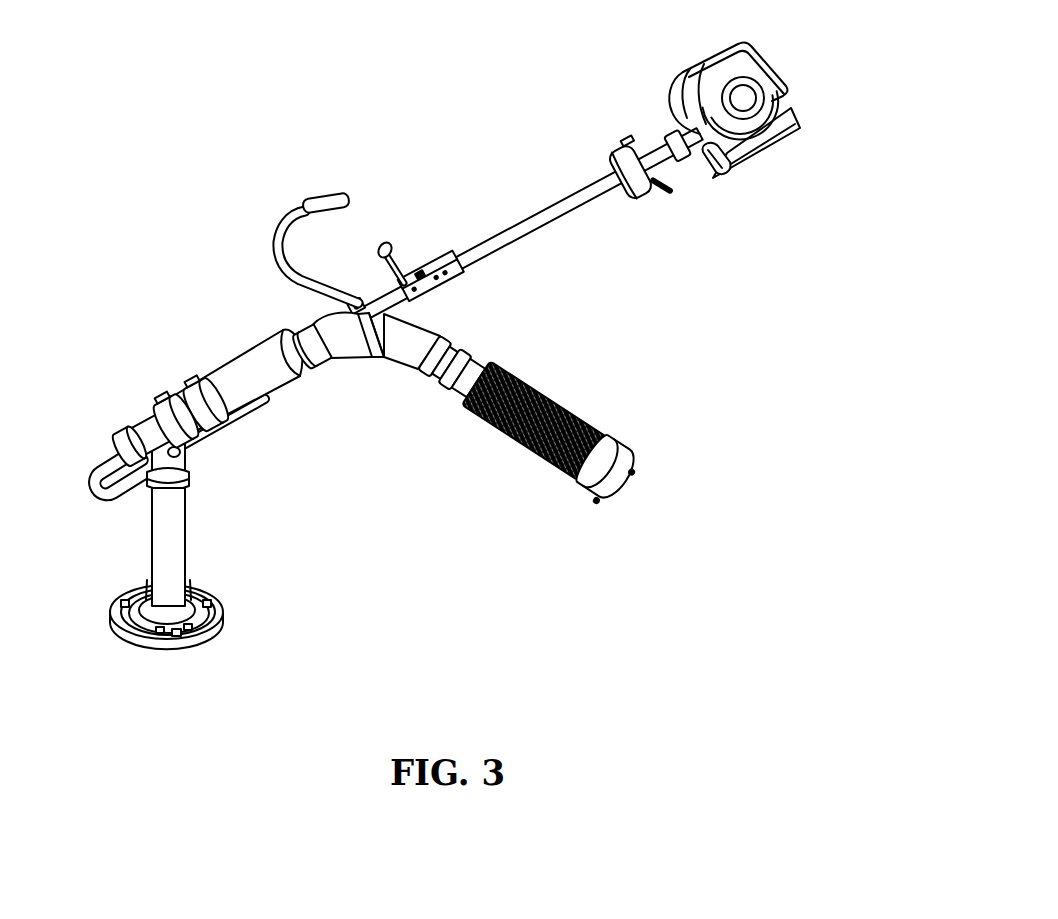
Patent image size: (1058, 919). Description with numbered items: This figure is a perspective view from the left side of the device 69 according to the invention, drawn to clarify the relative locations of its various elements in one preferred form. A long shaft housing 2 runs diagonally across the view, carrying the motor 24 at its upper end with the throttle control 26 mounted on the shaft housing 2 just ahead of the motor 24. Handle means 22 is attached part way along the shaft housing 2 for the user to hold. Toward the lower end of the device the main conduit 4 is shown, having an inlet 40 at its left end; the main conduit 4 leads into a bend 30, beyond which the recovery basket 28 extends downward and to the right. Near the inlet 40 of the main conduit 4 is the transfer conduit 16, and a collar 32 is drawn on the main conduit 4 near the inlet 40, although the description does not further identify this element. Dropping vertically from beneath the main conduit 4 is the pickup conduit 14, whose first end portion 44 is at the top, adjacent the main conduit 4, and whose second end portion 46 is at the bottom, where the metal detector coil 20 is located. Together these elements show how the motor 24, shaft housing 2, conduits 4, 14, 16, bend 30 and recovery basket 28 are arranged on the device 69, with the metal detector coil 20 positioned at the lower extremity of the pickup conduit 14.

The shaft housing 2 is at (525, 220).
The main conduit 4 is at (257, 370).
The pickup conduit 14 is at (173, 533).
The transfer conduit 16 is at (100, 500).
The metal detector coil 20 is at (217, 613).
The handle means 22 is at (278, 222).
The motor 24 is at (723, 72).
The throttle control 26 is at (619, 160).
The recovery basket 28 is at (553, 400).
The bend 30 is at (410, 353).
The clamp collar 32 is at (143, 430).
The inlet 40 is at (127, 433).
The first end portion 44 is at (180, 481).
The second end portion 46 is at (181, 646).
The device 69 is at (402, 140).